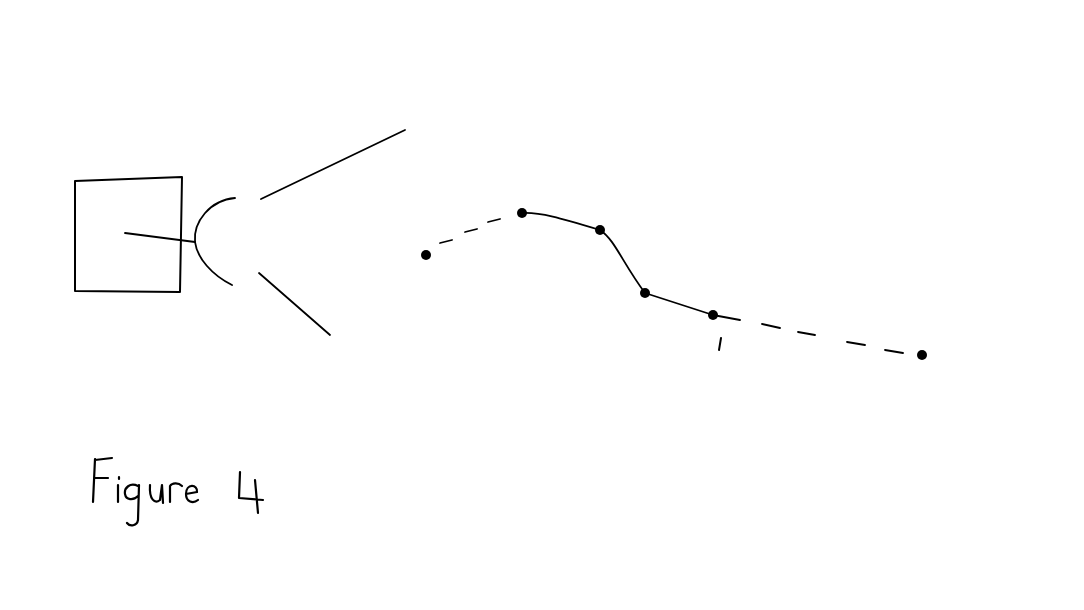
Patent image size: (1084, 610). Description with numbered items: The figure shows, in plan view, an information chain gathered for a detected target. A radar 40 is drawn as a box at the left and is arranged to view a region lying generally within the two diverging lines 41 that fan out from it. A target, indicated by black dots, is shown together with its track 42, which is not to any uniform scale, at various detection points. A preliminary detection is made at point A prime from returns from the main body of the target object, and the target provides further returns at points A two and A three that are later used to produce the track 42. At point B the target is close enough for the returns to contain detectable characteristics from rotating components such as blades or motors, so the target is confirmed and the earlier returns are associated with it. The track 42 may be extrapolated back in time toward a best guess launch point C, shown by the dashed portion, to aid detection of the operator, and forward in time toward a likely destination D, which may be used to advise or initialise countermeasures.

The radar 40 is at (135, 170).
The lines 41 is at (328, 162).
The track 42 is at (680, 297).